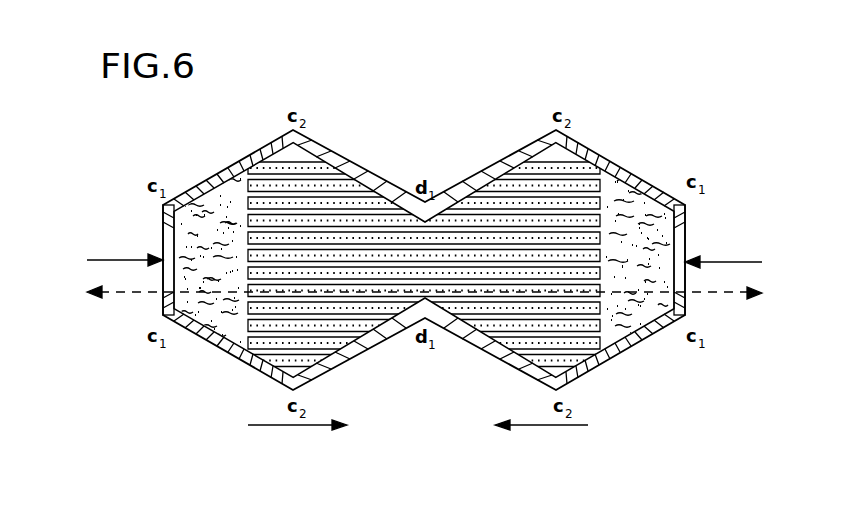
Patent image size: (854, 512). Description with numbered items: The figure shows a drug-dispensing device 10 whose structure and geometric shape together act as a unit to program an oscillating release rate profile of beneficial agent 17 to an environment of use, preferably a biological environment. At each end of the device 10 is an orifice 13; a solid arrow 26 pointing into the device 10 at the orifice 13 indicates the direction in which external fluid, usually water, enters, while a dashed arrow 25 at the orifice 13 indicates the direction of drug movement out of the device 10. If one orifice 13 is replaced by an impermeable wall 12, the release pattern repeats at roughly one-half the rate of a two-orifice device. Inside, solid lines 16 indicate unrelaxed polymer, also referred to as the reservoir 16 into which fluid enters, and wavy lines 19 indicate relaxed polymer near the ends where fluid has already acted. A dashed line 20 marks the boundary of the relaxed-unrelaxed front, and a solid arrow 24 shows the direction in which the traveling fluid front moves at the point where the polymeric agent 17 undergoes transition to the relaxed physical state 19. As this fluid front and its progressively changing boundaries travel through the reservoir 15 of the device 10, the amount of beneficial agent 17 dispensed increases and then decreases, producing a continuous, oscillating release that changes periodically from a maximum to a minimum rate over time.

The device 10 is at (214, 371).
The impermeable wall 12 is at (372, 180).
The orifice 13 is at (166, 228).
The reservoir 15 is at (595, 180).
The unrelaxed polymer 16 is at (325, 200).
The beneficial agent 17 is at (330, 325).
The relaxed polymer 19 is at (190, 215).
The relaxed-unrelaxed front boundary 20 is at (245, 215).
The fluid front direction arrow 24 is at (297, 428).
The drug movement arrow 25 is at (115, 294).
The fluid movement arrow 26 is at (103, 260).